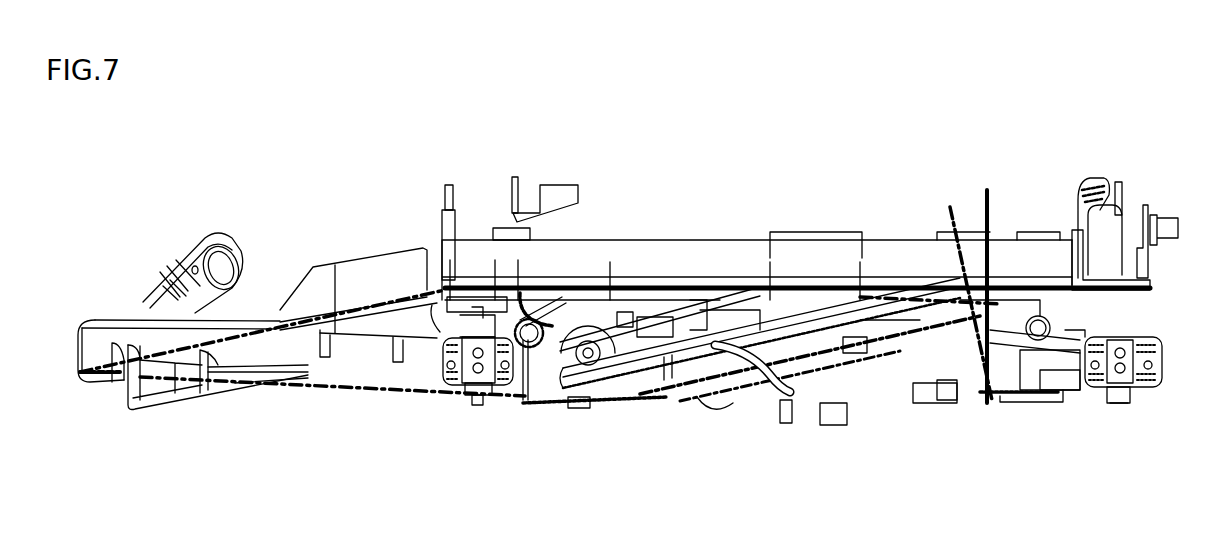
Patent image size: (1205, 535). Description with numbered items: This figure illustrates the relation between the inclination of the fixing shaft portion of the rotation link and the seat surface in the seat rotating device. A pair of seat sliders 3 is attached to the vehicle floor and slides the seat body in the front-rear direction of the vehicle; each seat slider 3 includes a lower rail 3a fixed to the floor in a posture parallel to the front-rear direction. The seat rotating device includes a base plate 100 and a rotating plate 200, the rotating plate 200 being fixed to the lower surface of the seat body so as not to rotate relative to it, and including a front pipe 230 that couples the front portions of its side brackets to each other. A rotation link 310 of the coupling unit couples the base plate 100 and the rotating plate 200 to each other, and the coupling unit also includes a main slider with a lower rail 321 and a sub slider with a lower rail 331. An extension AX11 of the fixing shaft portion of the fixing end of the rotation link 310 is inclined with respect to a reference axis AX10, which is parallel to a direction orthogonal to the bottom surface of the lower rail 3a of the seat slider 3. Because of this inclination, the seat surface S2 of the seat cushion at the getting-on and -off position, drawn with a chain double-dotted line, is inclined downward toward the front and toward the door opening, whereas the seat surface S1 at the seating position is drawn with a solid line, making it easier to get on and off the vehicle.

The rotating plate 200 is at (95, 317).
The front pipe 230 is at (232, 353).
The seat surface at the getting-on and -off position S2 is at (345, 392).
The seat surface at the seating position S1 is at (550, 283).
The rotation link 310 is at (700, 303).
The reference axis AX10 is at (990, 203).
The extension of fixing shaft portion AX11 is at (958, 203).
The seat slider 3 is at (450, 395).
The lower rail 3a is at (1138, 392).
The lower rail 321 is at (600, 370).
The lower rail 331 is at (942, 403).
The base plate 100 is at (745, 413).